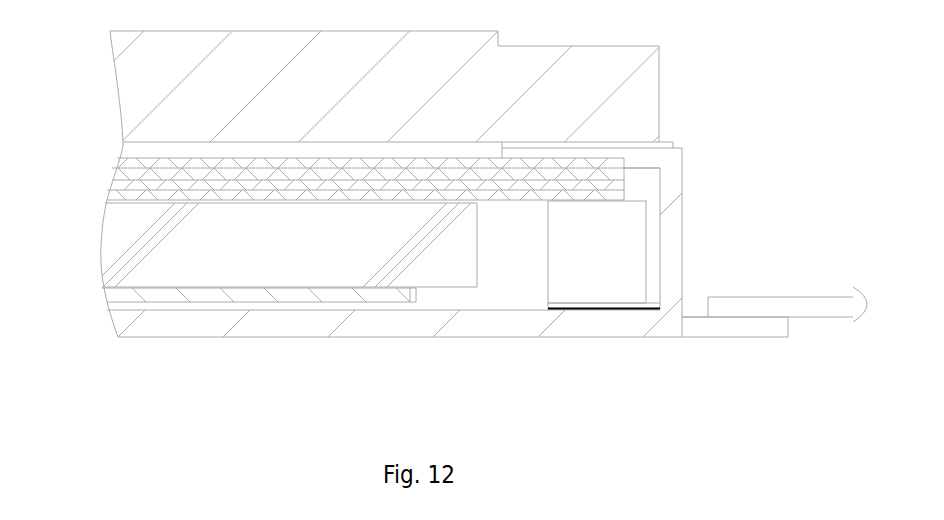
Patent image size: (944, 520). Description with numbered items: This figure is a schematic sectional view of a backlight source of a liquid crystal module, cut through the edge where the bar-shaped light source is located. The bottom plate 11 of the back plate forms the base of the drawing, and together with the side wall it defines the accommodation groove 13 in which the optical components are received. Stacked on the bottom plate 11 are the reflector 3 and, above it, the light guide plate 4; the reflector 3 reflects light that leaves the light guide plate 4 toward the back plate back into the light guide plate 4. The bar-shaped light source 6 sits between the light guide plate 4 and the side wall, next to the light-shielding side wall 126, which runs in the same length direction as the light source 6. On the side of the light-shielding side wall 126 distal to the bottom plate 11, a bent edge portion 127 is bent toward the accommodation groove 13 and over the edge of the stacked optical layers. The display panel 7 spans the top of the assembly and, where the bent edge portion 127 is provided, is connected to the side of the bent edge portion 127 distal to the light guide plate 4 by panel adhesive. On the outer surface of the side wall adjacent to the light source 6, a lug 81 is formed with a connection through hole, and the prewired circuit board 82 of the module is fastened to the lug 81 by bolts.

The display panel 7 is at (153, 52).
The bent edge portion 127 is at (628, 157).
The light-shielding side wall 126 is at (669, 281).
The light guide plate 4 is at (143, 218).
The reflector 3 is at (163, 293).
The bottom plate 11 is at (195, 328).
The bar-shaped light source 6 is at (573, 271).
The lug 81 is at (722, 328).
The prewired circuit board 82 is at (812, 310).
The accommodation groove 13 is at (518, 277).